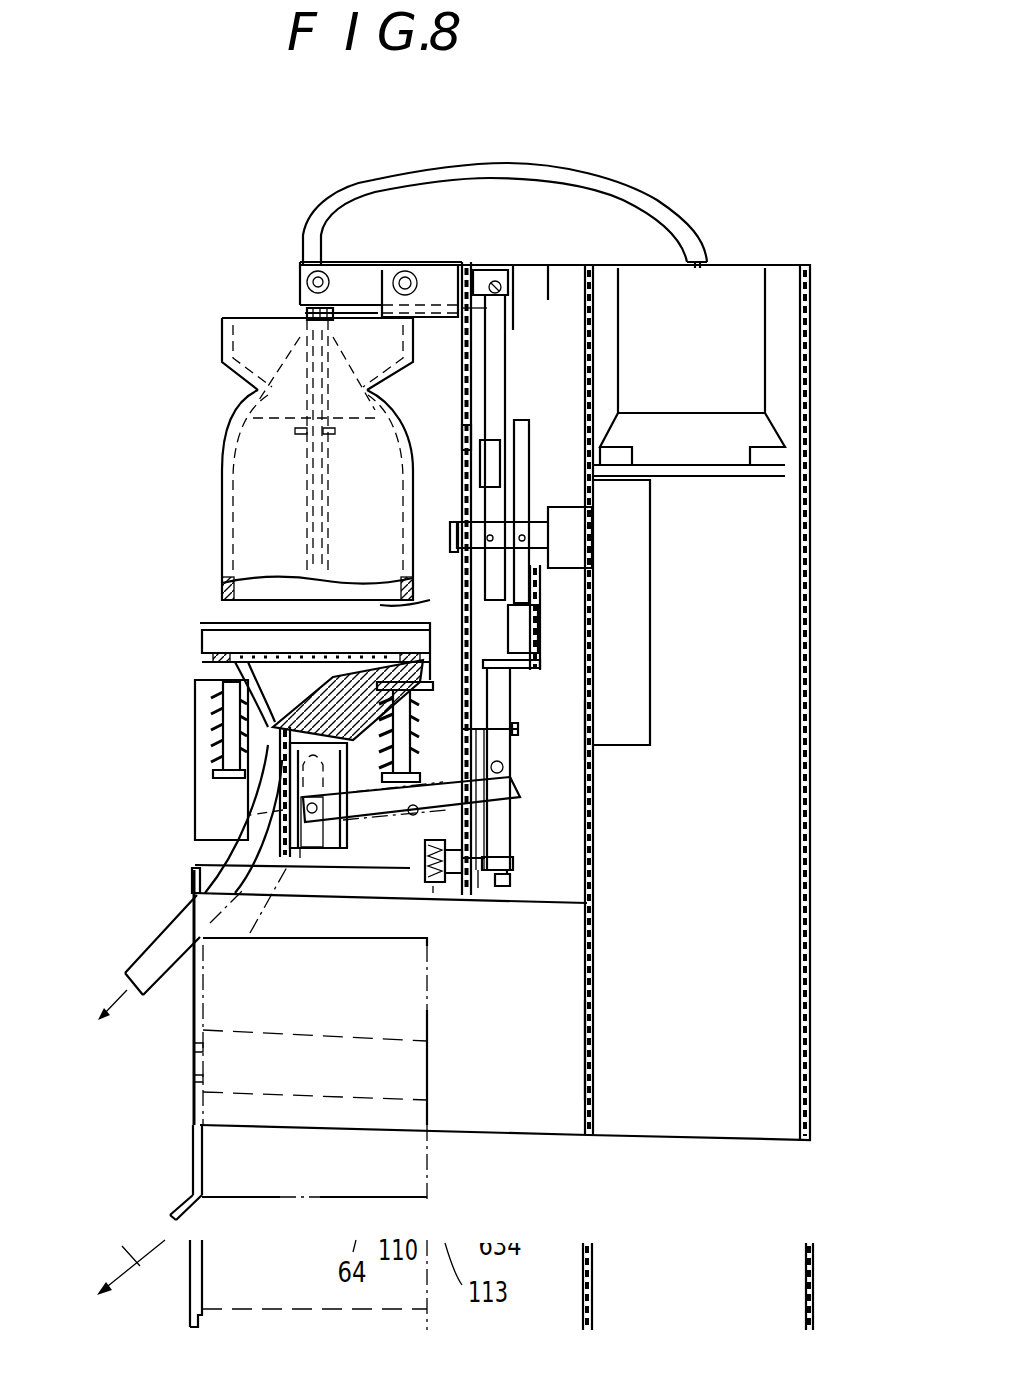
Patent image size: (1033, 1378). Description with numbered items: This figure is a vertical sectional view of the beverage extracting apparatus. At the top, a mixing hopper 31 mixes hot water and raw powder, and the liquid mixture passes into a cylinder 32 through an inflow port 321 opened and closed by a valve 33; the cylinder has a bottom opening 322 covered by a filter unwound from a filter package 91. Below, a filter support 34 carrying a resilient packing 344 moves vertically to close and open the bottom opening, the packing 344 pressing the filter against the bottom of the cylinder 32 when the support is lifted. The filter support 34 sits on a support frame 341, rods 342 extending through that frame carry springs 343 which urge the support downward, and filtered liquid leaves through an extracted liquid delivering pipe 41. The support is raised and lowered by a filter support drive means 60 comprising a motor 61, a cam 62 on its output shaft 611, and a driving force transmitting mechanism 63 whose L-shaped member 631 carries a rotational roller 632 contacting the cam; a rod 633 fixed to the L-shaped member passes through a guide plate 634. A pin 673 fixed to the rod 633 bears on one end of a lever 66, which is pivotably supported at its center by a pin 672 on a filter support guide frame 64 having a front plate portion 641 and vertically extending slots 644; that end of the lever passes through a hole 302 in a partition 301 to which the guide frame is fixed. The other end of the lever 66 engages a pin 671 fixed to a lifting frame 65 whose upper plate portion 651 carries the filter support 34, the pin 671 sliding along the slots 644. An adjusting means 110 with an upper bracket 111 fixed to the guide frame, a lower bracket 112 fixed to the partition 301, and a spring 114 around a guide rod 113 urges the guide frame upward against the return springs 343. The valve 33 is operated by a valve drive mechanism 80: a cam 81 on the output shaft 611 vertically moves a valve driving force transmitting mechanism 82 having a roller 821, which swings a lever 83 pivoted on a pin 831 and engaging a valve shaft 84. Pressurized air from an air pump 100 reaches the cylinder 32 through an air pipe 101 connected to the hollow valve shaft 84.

The air pipe 101 is at (560, 170).
The air pump 100 is at (735, 272).
The cam 62 is at (585, 425).
The motor 61 is at (640, 550).
The filter support drive means 60 is at (676, 723).
The valve drive mechanism 80 is at (542, 300).
The lever 83 is at (486, 270).
The pin 831 is at (406, 271).
The valve shaft 84 is at (282, 443).
The cam 81 is at (490, 508).
The valve driving force transmitting mechanism 82 is at (462, 385).
The roller 821 is at (490, 460).
The output shaft 611 is at (542, 520).
The rotational roller 632 is at (522, 633).
The L-shaped member 631 is at (510, 670).
The hole 302 is at (518, 729).
The partition 301 is at (463, 432).
The mixing hopper 31 is at (222, 318).
The valve 33 is at (260, 405).
The cylinder 32 is at (220, 485).
The inflow port 321 is at (289, 447).
The opening 322 is at (393, 610).
The filter support 34 is at (200, 623).
The resilient packing 344 is at (385, 690).
The upper plate portion 651 is at (262, 690).
The support frame 341 is at (195, 768).
The rods 342 is at (225, 700).
The springs 343 is at (225, 733).
The lifting frame 65 is at (280, 835).
The pin 673 is at (503, 772).
The pin 672 is at (414, 805).
The slots 644 is at (268, 806).
The adjusting means 110 is at (412, 905).
The lower bracket 112 is at (440, 886).
The upper bracket 111 is at (428, 850).
The spring 114 is at (487, 860).
The rod 633 is at (507, 888).
The guide plate 634 is at (478, 890).
The guide rod 113 is at (433, 893).
The driving force transmitting mechanism 63 is at (580, 778).
The filter support guide frame 64 is at (352, 878).
The extracted liquid delivering pipe 41 is at (137, 967).
The front plate portion 641 is at (190, 903).
The pin 671 is at (313, 858).
The lever 66 is at (250, 933).
The filter package 91 is at (413, 1187).